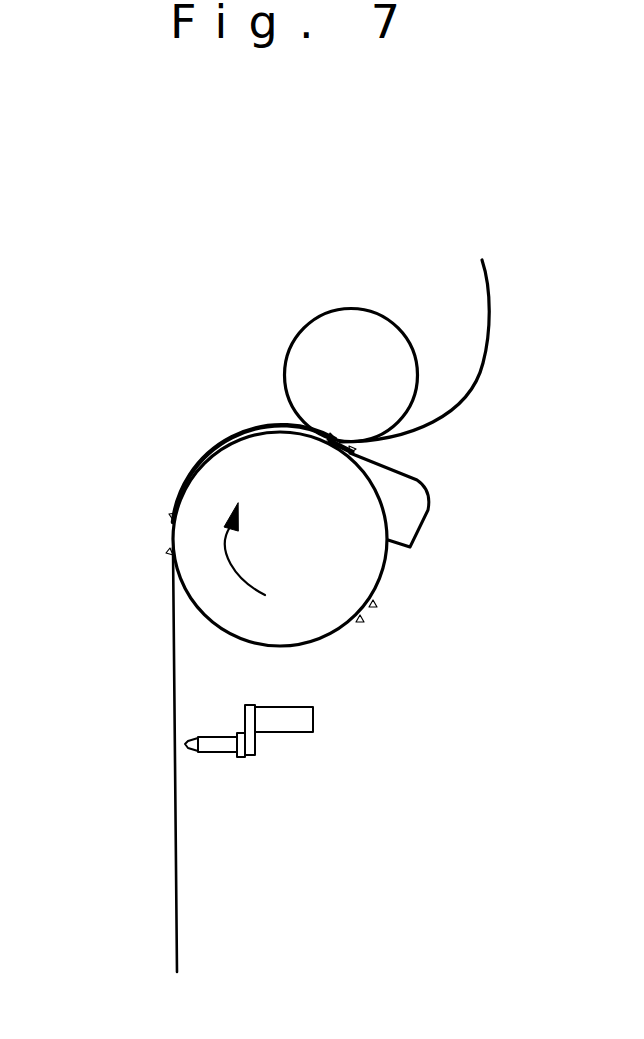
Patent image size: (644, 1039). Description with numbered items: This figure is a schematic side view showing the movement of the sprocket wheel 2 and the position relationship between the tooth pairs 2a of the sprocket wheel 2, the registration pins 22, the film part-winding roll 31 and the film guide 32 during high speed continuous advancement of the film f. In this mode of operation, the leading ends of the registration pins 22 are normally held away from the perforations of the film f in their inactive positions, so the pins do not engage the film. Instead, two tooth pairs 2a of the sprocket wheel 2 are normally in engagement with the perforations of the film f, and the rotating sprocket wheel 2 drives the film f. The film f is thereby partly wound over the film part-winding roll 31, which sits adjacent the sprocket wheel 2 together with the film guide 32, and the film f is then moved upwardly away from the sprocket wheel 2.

The sprocket wheel 2 is at (353, 583).
The tooth pair 2a is at (173, 522).
The film part-winding roll 31 is at (353, 337).
The film guide 32 is at (403, 510).
The registration pin 22 is at (222, 753).
The film f is at (177, 908).